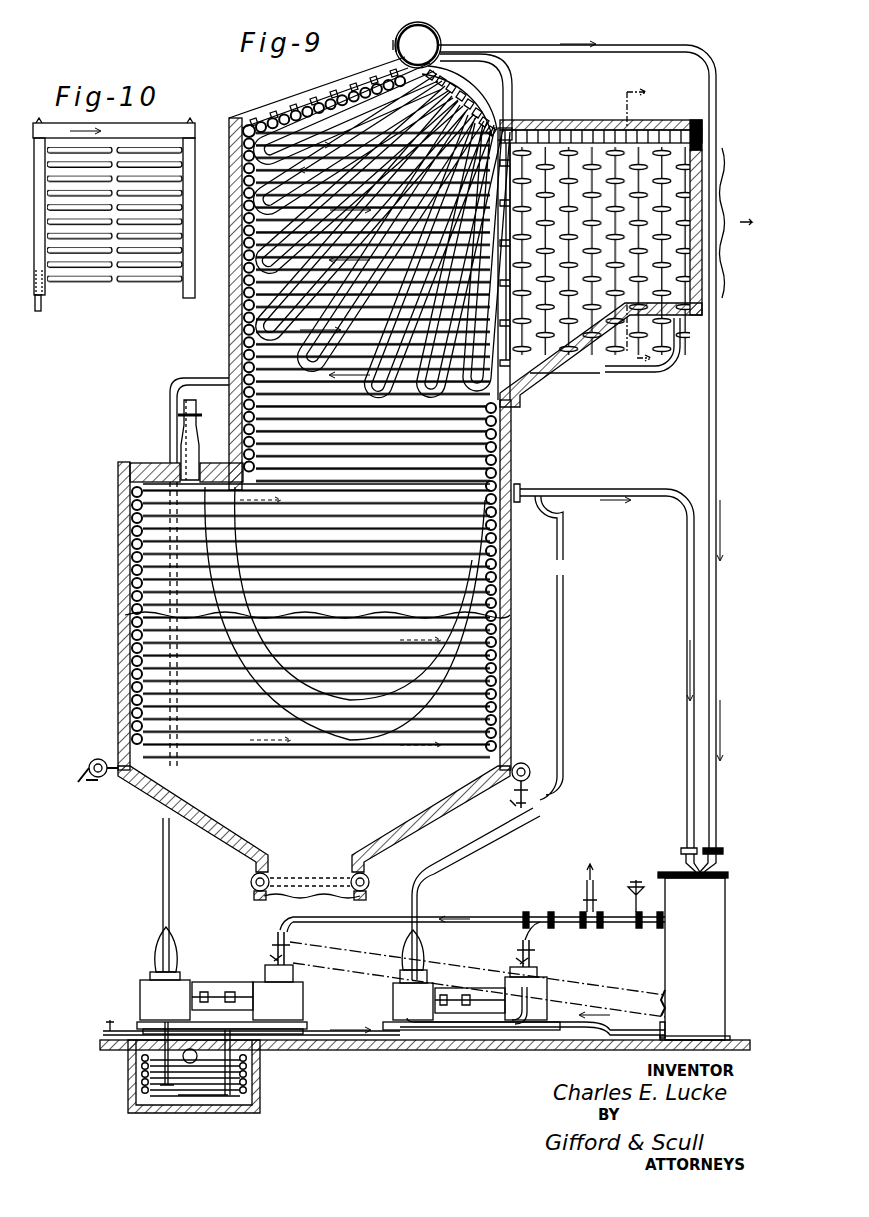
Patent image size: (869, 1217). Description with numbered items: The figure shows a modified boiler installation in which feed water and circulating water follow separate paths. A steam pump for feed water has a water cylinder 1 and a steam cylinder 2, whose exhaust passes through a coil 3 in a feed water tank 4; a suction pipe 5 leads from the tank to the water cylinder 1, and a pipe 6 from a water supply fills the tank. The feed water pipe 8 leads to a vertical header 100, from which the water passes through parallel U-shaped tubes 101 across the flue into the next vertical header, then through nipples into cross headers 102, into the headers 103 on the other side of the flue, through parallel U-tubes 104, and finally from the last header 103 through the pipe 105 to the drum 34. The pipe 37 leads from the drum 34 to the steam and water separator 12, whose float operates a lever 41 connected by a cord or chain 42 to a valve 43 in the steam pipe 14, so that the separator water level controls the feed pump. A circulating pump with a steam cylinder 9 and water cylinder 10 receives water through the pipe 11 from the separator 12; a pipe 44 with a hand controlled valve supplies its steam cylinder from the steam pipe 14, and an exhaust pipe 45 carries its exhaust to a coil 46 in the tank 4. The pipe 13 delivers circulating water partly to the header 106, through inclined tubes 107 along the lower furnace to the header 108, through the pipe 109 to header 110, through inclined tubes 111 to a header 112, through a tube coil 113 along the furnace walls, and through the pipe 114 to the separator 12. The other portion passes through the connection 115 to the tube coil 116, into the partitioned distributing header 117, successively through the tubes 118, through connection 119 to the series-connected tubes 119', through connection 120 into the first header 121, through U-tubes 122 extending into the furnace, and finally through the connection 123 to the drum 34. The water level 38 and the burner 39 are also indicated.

In FIG. 9, the water cylinder 1 is at (138, 990).
In FIG. 9, the steam cylinder 2 is at (304, 995).
In FIG. 9, the coil 3 is at (250, 1073).
In FIG. 9, the feed water tank 4 is at (128, 1078).
In FIG. 9, the suction pipe 5 is at (148, 1098).
In FIG. 9, the pipe 6 is at (110, 1022).
In FIG. 10, the feed water pipe 8 is at (36, 310).
In FIG. 9, the feed water pipe 8 is at (650, 372).
In FIG. 9, the steam cylinder 9 is at (547, 985).
In FIG. 9, the water cylinder 10 is at (372, 1003).
In FIG. 9, the pipe 11 is at (600, 1052).
In FIG. 9, the steam and water separator 12 is at (705, 955).
In FIG. 9, the pipe 13 is at (455, 850).
In FIG. 9, the steam pipe 14 is at (495, 915).
In FIG. 9, the drum 34 is at (438, 38).
In FIG. 9, the pipe 37 is at (635, 46).
In FIG. 9, the water level 38 is at (317, 618).
In FIG. 9, the burner 39 is at (178, 450).
In FIG. 9, the lever 41 is at (668, 998).
In FIG. 9, the cord or chain 42 is at (590, 1000).
In FIG. 9, the valve 43 is at (290, 950).
In FIG. 9, the pipe 44 is at (615, 926).
In FIG. 9, the exhaust pipe 45 is at (360, 1042).
In FIG. 9, the coil 46 is at (250, 1086).
In FIG. 10, the vertical header 100 is at (45, 290).
In FIG. 9, the vertical header 100 is at (683, 268).
In FIG. 10, the U-shaped tubes 101 is at (105, 290).
In FIG. 9, the U-shaped tubes 101 is at (680, 212).
In FIG. 10, the cross headers 102 is at (160, 127).
In FIG. 9, the cross headers 102 is at (575, 128).
In FIG. 10, the headers 103 is at (186, 292).
In FIG. 10, the U-tubes 104 is at (170, 170).
In FIG. 9, the pipe 105 is at (513, 82).
In FIG. 9, the header 106 is at (530, 768).
In FIG. 9, the inclined tubes 107 is at (400, 835).
In FIG. 9, the header 108 is at (380, 876).
In FIG. 9, the pipe 109 is at (290, 878).
In FIG. 9, the header 110 is at (250, 884).
In FIG. 9, the tubes 111 is at (225, 820).
In FIG. 9, the header 112 is at (92, 778).
In FIG. 9, the tube coil 113 is at (315, 765).
In FIG. 9, the pipe 114 is at (605, 490).
In FIG. 9, the connection 115 is at (565, 617).
In FIG. 9, the tube coil 116 is at (512, 432).
In FIG. 9, the distributing header 117 is at (505, 398).
In FIG. 9, the tube 118 is at (246, 318).
In FIG. 9, the connection 119 is at (255, 109).
In FIG. 9, the tubes 119' is at (334, 100).
In FIG. 9, the connection 120 is at (500, 44).
In FIG. 9, the header 121 is at (510, 128).
In FIG. 9, the U-tubes 122 is at (240, 330).
In FIG. 9, the connection 123 is at (450, 62).